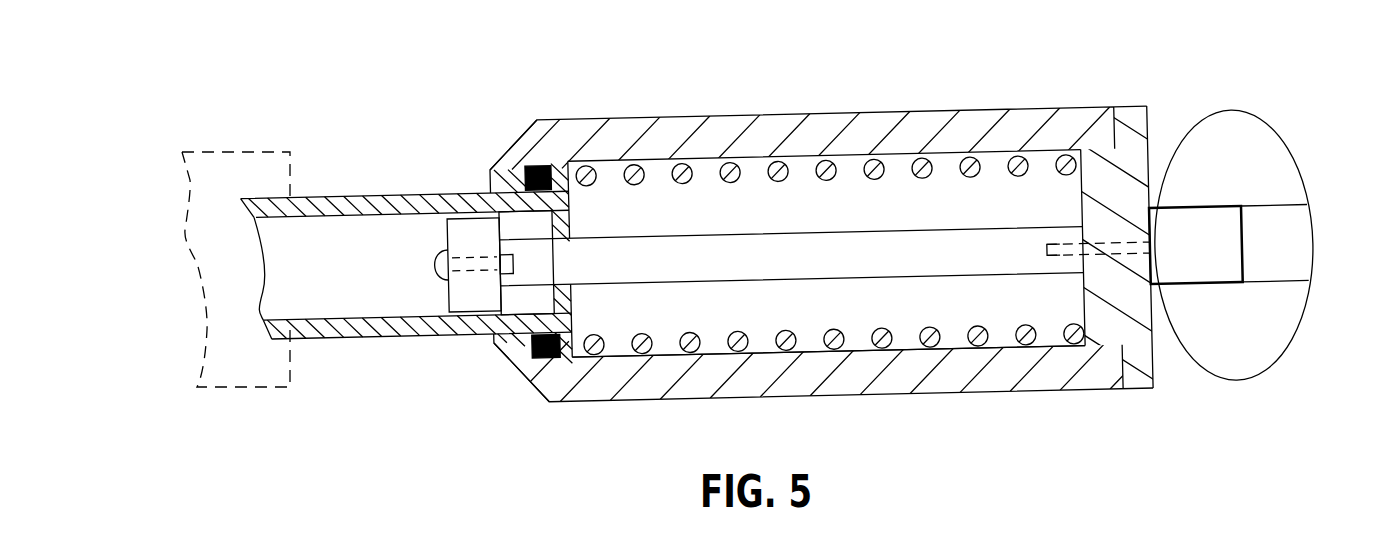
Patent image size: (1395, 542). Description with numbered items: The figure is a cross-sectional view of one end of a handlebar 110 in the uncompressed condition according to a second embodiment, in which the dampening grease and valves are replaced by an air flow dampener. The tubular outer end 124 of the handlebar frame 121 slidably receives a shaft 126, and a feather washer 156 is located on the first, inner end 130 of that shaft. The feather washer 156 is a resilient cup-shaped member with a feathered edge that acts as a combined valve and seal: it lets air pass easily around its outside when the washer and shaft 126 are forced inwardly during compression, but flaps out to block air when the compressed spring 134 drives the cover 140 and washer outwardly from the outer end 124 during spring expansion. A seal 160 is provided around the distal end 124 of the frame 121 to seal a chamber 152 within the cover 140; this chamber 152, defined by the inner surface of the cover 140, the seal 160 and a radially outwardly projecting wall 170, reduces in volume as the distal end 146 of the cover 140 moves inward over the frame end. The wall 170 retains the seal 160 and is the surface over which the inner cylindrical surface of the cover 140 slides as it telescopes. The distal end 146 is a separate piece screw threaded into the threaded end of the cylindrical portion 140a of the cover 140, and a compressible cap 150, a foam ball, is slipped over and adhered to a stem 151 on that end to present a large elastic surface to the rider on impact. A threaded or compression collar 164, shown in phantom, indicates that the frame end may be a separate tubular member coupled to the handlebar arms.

The handlebar 110 is at (388, 190).
The handlebar frame 121 is at (258, 212).
The outer end of handlebar frame 124 is at (580, 303).
The shaft 126 is at (903, 243).
The first end of shaft 130 is at (520, 190).
The spring 134 is at (735, 160).
The cover 140 is at (785, 108).
The cylindrical portion of cover 140a is at (1085, 150).
The distal end of cover 146 is at (1153, 115).
The compressible cap 150 is at (1226, 137).
The stem 151 is at (1245, 233).
The chamber 152 is at (953, 277).
The feather washer 156 is at (470, 232).
The seal 160 is at (535, 362).
The collar 164 is at (200, 152).
The wall 170 is at (550, 170).